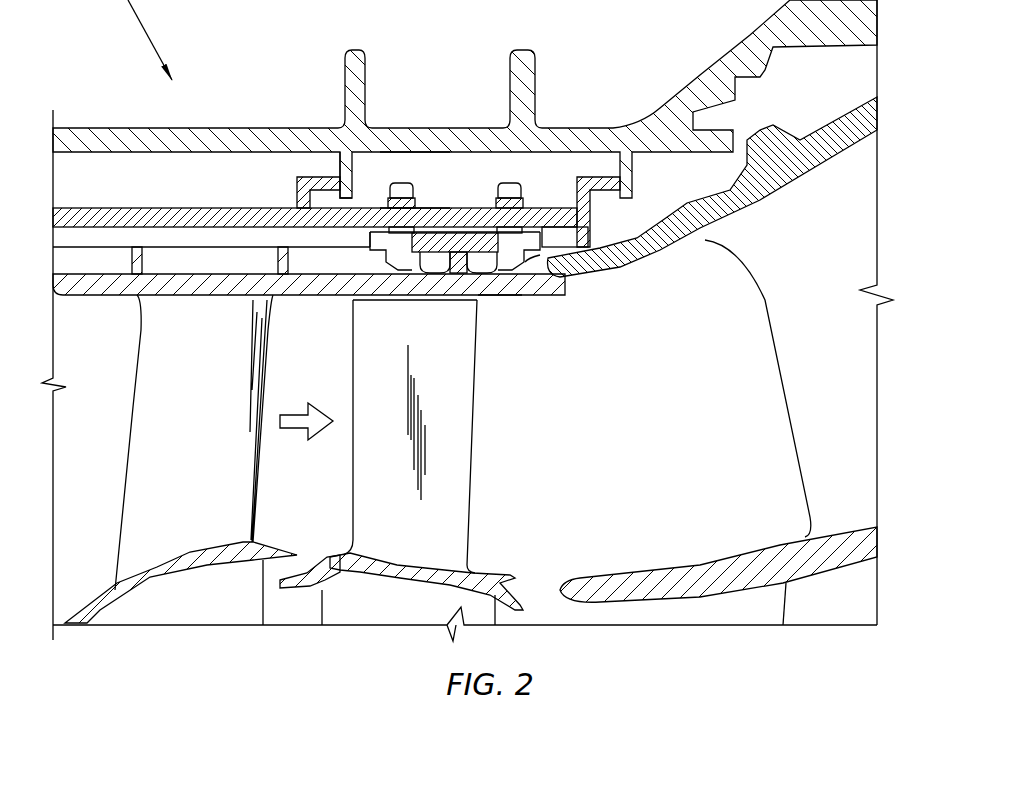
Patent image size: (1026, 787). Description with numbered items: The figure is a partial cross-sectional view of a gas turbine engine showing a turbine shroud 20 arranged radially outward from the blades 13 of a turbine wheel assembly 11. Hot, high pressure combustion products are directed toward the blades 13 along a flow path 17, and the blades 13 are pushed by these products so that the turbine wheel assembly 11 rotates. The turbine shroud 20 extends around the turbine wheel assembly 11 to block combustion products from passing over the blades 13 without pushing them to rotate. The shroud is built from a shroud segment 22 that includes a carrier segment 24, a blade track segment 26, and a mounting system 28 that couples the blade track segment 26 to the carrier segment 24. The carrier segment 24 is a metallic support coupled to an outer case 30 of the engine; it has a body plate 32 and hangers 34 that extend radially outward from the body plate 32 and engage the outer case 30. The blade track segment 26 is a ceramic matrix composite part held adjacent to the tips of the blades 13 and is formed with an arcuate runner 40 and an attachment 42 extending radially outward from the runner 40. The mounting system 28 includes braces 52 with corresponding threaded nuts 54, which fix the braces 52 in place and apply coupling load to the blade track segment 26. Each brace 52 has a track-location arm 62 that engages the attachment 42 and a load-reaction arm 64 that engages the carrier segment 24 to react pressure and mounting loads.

The turbine wheel assembly 11 is at (522, 533).
The blades 13 is at (443, 513).
The flow path 17 is at (287, 413).
The turbine shroud 20 is at (410, 166).
The shroud segment 22 is at (435, 166).
The carrier segment 24 is at (563, 205).
The blade track segment 26 is at (542, 299).
The mounting system 28 is at (527, 152).
The outer case 30 is at (220, 126).
The body plate 32 is at (374, 205).
The hangers 34 is at (291, 193).
The runner 40 is at (499, 299).
The attachment 42 is at (404, 270).
The braces 52 is at (277, 294).
The threaded nuts 54 is at (419, 193).
The track-location arm 62 is at (370, 263).
The load-reaction arm 64 is at (366, 237).